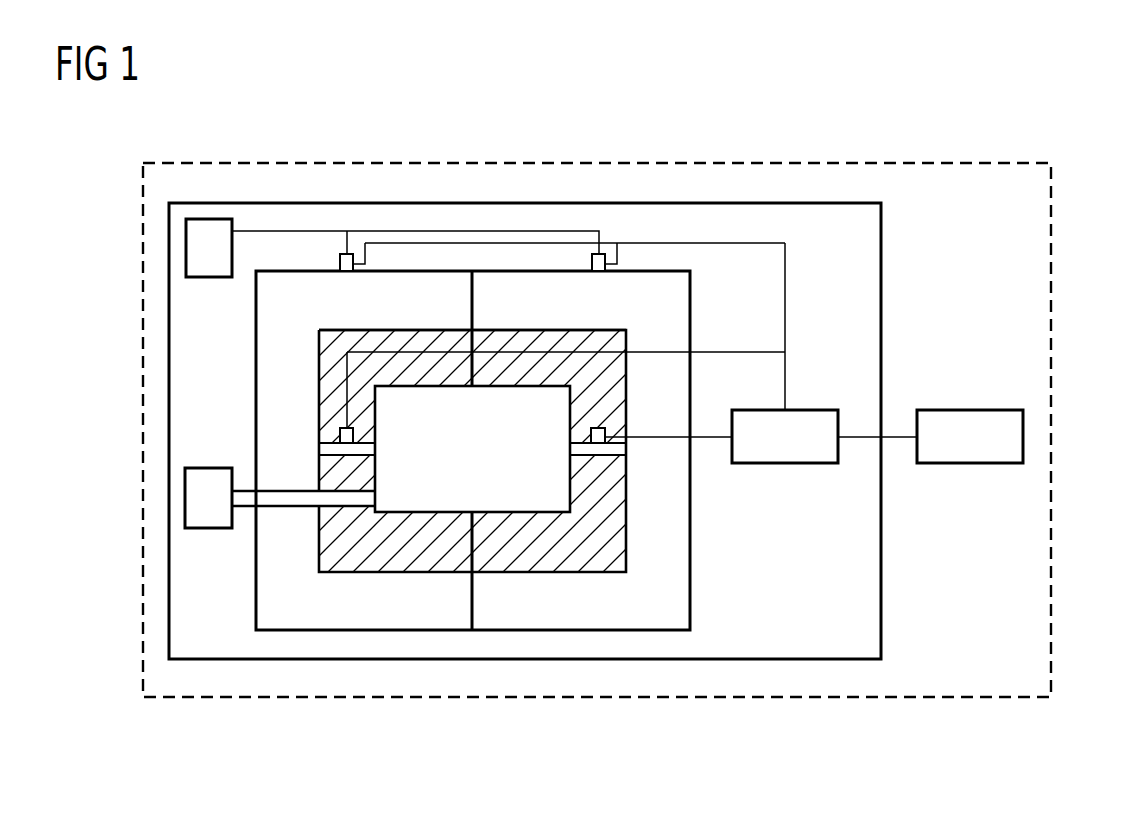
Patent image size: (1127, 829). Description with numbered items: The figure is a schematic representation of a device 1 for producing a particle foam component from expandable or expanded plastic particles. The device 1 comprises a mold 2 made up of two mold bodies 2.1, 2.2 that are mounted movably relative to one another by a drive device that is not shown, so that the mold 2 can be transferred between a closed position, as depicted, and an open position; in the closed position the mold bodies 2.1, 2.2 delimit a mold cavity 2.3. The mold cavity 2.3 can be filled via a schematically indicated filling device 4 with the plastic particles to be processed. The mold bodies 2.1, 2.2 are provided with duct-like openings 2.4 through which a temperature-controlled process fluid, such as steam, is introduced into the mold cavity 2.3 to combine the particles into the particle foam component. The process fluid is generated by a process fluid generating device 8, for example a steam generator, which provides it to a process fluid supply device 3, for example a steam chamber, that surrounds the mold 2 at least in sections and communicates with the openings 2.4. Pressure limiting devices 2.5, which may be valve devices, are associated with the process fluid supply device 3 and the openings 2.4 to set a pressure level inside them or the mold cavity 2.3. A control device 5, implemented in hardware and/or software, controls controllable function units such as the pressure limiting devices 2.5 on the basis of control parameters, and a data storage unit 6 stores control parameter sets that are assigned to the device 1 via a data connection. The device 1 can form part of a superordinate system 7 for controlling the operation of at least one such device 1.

The device 1 is at (735, 672).
The mold 2 is at (630, 645).
The mold body 2.1 is at (333, 353).
The mold body 2.2 is at (527, 342).
The mold cavity 2.3 is at (462, 470).
The duct-like openings 2.4 is at (330, 452).
The pressure limiting device 2.5 is at (338, 263).
The process fluid supply device 3 is at (416, 608).
The filling device 4 is at (293, 520).
The control device 5 is at (787, 463).
The data storage unit 6 is at (1023, 437).
The system 7 is at (980, 163).
The process fluid generating device 8 is at (207, 219).